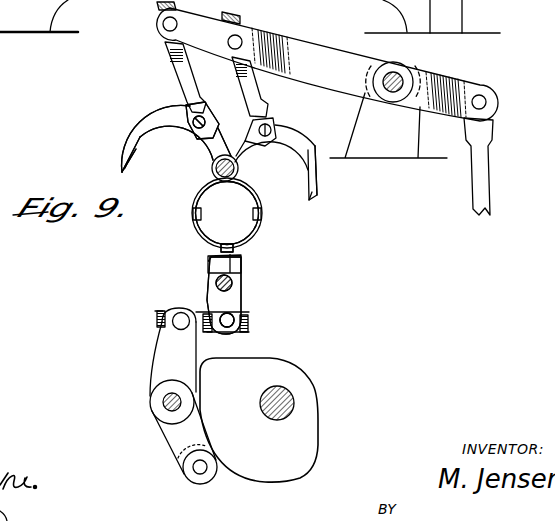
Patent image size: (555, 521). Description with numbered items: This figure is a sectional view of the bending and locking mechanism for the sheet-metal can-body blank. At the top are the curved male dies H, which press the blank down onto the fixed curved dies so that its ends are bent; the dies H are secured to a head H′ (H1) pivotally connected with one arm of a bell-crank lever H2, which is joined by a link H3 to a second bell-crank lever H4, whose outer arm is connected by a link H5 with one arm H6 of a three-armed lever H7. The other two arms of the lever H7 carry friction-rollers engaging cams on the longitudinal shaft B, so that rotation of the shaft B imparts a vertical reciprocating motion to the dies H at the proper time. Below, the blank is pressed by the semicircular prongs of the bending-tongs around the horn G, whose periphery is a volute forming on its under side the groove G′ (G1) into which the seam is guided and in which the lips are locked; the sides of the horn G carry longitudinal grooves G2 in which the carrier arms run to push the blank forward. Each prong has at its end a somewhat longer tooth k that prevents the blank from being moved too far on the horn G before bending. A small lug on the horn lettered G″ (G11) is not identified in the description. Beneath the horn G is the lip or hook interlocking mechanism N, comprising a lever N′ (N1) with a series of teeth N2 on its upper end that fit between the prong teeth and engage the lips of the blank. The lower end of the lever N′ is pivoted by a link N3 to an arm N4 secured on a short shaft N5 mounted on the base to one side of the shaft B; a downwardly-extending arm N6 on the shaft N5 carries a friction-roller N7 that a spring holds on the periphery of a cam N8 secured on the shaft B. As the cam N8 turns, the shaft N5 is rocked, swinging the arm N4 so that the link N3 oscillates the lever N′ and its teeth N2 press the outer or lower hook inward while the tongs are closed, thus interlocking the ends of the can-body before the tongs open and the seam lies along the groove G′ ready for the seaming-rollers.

The curved dies H is at (327, 170).
The head H' is at (176, 137).
The head H1 is at (176, 137).
The bell-crank lever H2 is at (297, 144).
The link H3 is at (212, 168).
The bell-crank lever H4 is at (127, 143).
The link H5 is at (194, 98).
The arm of three-armed lever H6 is at (300, 68).
The three-armed lever H7 is at (493, 175).
The longer tooth k is at (127, 161).
The horn G is at (244, 213).
The groove G' is at (227, 213).
The groove G1 is at (227, 213).
The longitudinal grooves G2 is at (192, 215).
The ring bottom lug G'' is at (221, 234).
The ring bottom lug G11 is at (221, 234).
The lip or hook interlocking mechanism N is at (220, 316).
The lever N' is at (249, 295).
The lever N1 is at (249, 295).
The teeth N2 is at (208, 256).
The link N3 is at (213, 332).
The arm N4 is at (163, 360).
The short shaft N5 is at (164, 404).
The downwardly-extending arm N6 is at (180, 445).
The friction-roller N7 is at (212, 483).
The cam N8 is at (259, 420).
The longitudinal shaft B is at (295, 401).